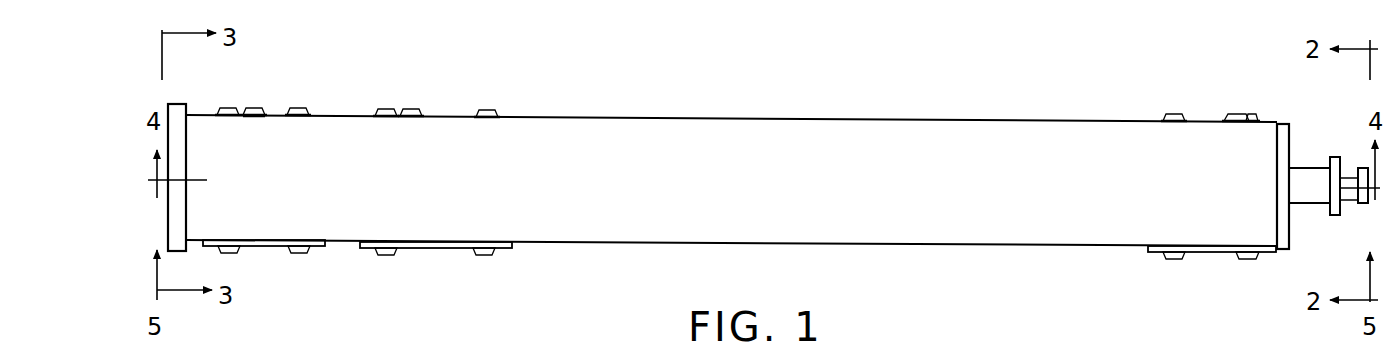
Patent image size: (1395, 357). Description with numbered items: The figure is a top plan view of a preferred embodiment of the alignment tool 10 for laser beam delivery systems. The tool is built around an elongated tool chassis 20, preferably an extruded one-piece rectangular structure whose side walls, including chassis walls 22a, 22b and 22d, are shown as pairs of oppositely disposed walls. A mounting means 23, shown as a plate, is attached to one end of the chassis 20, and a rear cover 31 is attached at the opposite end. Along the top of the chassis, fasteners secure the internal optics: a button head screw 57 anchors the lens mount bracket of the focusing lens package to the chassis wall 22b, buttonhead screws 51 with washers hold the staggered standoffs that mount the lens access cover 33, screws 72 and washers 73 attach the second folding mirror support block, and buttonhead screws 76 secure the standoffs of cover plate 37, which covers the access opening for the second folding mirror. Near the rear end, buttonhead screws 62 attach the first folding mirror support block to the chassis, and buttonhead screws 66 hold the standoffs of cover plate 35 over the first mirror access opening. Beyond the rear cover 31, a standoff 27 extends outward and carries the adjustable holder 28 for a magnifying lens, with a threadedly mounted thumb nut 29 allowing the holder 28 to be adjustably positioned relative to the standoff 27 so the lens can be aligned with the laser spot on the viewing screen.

The alignment tool 10 is at (599, 60).
The tool chassis 20 is at (812, 108).
The chassis wall 22a is at (652, 143).
The chassis wall 22b is at (711, 119).
The chassis wall 22d is at (740, 245).
The mounting means 23 is at (174, 118).
The standoff 27 is at (1297, 180).
The adjustable holder 28 is at (1335, 158).
The thumb nut 29 is at (1364, 203).
The cover 31 is at (1283, 126).
The lens access cover 33 is at (448, 244).
The cover plate 35 is at (1205, 254).
The cover plate 37 is at (268, 246).
The buttonhead screw 51 is at (387, 108).
The button head screw 57 is at (412, 108).
The buttonhead screw 62 is at (1240, 115).
The buttonhead screw 66 is at (1175, 114).
The screw 72 is at (256, 108).
The washer 73 is at (248, 118).
The buttonhead screw 76 is at (228, 108).